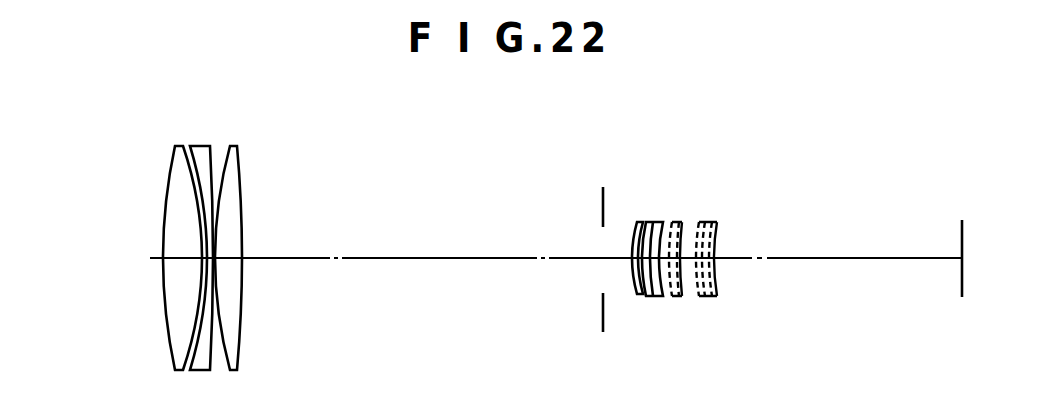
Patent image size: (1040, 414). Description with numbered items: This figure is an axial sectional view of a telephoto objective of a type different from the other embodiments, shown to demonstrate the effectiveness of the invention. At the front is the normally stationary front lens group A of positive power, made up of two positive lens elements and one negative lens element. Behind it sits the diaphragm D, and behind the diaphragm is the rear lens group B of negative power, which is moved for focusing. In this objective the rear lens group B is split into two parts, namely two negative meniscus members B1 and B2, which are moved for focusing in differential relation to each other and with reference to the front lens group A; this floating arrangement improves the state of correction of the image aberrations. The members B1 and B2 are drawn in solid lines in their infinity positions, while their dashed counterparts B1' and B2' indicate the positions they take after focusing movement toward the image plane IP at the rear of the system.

The front lens group A is at (177, 131).
The rear lens group B is at (628, 167).
The first negative meniscus member B1 is at (657, 233).
The second negative meniscus member B2 is at (684, 254).
The first rear lens unit (shifted position) B1' is at (682, 280).
The second rear lens unit (shifted position) B2' is at (712, 280).
The diaphragm D is at (603, 197).
The image plane IP is at (962, 226).